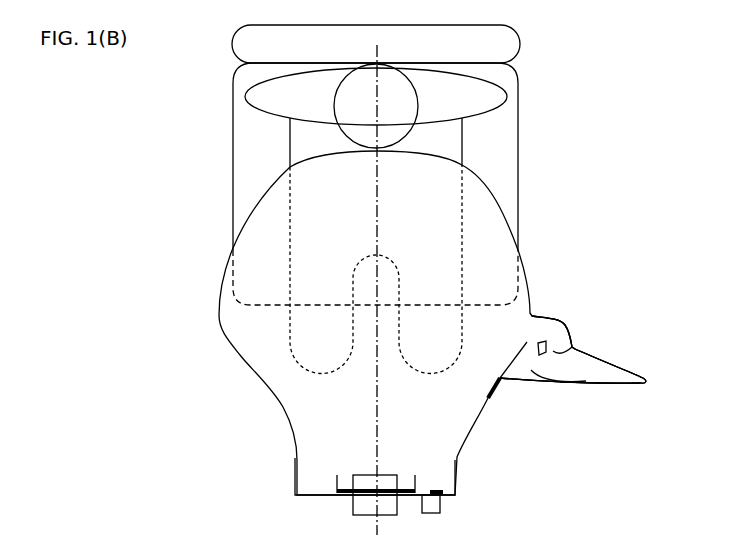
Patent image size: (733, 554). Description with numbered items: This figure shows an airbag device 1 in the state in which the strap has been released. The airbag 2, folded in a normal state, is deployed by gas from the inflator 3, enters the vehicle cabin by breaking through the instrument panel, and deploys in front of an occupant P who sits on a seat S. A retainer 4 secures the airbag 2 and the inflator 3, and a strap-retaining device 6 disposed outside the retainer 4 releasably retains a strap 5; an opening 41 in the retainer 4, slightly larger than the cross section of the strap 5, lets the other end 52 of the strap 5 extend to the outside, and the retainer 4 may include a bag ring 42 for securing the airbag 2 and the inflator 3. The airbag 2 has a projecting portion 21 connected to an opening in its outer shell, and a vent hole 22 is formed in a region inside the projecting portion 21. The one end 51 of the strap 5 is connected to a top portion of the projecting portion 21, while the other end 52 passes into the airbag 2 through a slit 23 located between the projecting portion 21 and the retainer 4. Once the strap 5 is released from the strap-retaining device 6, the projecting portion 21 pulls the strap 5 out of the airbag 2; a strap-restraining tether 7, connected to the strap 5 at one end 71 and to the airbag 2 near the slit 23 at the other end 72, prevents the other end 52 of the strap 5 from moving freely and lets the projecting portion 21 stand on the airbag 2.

The seat S is at (521, 45).
The occupant P is at (258, 116).
The airbag device 1 is at (418, 323).
The airbag 2 is at (219, 318).
The inflator 3 is at (362, 475).
The retainer 4 is at (296, 481).
The opening 41 is at (431, 490).
The bag ring 42 is at (337, 481).
The strap 5 is at (645, 381).
The one end of the strap 51 is at (587, 343).
The other end of the strap 52 is at (539, 368).
The strap-retaining device 6 is at (442, 506).
The strap-restraining tether 7 is at (529, 383).
The one end of the strap-restraining tether 71 is at (585, 383).
The other end of the strap-restraining tether 72 is at (487, 388).
The projecting portion 21 is at (558, 325).
The vent hole 22 is at (533, 340).
The slit 23 is at (500, 373).